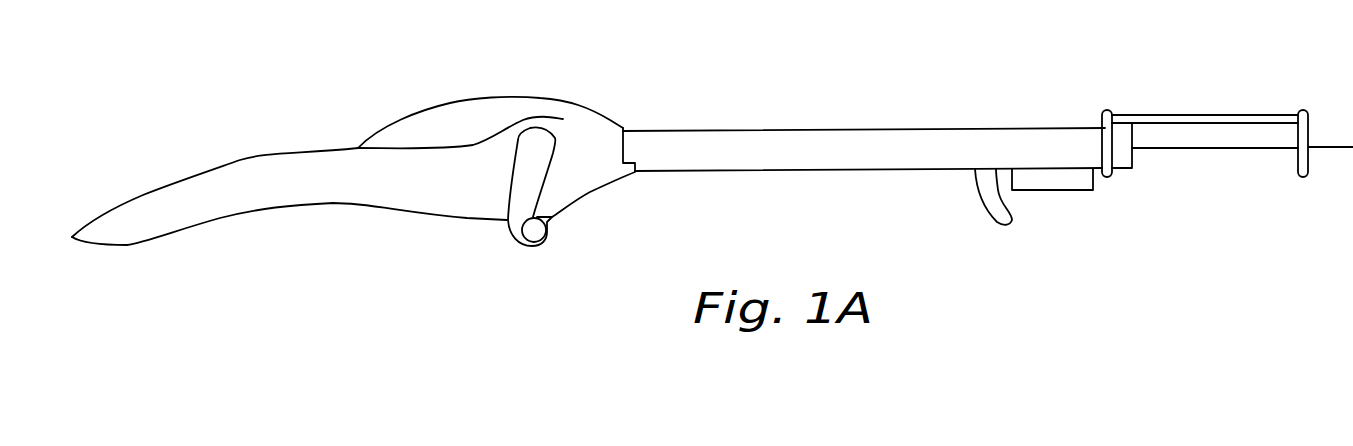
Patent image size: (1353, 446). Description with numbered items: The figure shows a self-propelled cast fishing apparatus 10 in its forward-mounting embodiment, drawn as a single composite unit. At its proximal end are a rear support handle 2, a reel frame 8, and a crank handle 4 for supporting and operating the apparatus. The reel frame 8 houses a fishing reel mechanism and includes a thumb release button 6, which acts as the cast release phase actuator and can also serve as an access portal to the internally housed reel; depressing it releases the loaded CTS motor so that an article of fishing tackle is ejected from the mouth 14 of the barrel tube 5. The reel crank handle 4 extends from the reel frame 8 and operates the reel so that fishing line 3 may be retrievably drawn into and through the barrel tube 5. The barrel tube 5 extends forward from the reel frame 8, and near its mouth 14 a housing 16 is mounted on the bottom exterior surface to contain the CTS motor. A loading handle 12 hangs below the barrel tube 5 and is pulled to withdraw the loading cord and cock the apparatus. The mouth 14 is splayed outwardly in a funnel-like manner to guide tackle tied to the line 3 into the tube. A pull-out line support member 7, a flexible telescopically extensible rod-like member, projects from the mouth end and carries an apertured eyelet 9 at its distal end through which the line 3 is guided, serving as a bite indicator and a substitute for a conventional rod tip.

The rear support handle 2 is at (182, 182).
The fishing line 3 is at (1240, 150).
The crank handle 4 is at (506, 232).
The barrel tube 5 is at (875, 128).
The thumb release button 6 is at (403, 115).
The pull-out line support member 7 is at (1245, 112).
The reel frame 8 is at (600, 115).
The apertured eyelet 9 is at (1310, 135).
The self-propelled cast fishing apparatus 10 is at (752, 56).
The loading handle 12 is at (997, 225).
The mouth 14 is at (1132, 168).
The housing 16 is at (1065, 190).